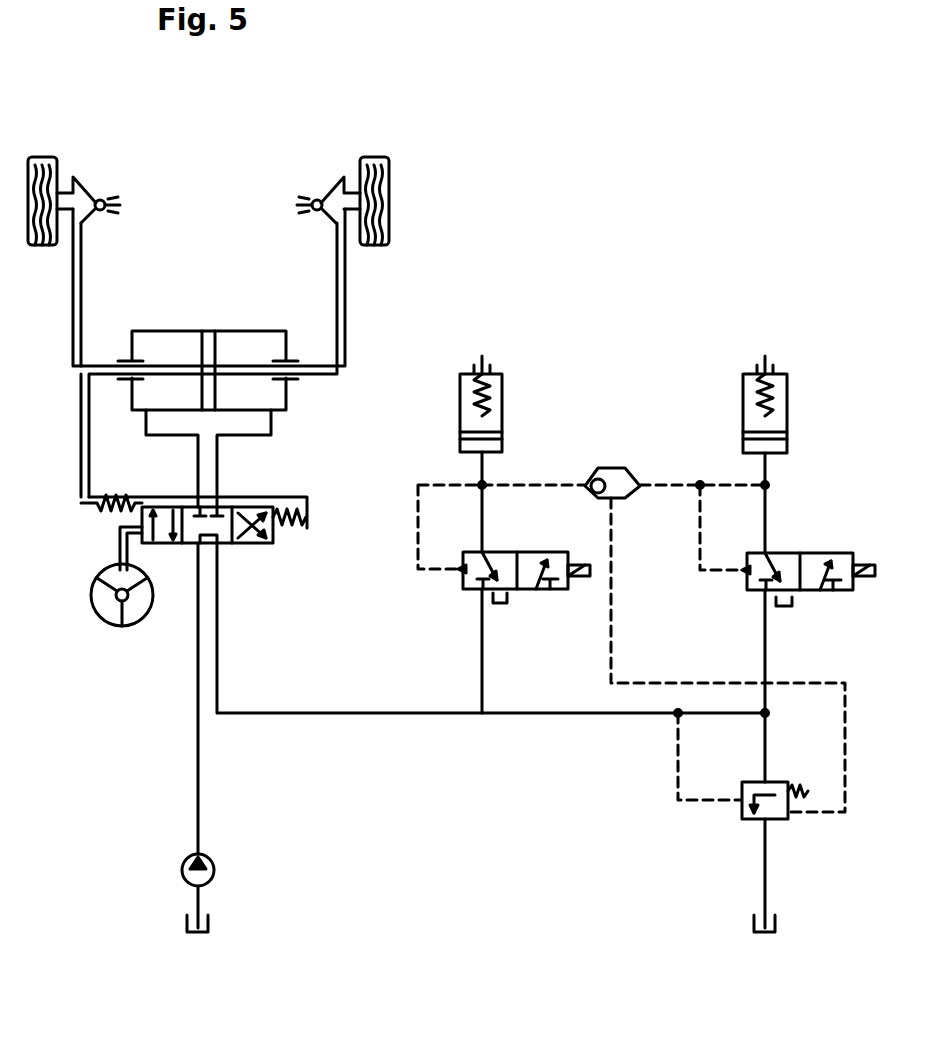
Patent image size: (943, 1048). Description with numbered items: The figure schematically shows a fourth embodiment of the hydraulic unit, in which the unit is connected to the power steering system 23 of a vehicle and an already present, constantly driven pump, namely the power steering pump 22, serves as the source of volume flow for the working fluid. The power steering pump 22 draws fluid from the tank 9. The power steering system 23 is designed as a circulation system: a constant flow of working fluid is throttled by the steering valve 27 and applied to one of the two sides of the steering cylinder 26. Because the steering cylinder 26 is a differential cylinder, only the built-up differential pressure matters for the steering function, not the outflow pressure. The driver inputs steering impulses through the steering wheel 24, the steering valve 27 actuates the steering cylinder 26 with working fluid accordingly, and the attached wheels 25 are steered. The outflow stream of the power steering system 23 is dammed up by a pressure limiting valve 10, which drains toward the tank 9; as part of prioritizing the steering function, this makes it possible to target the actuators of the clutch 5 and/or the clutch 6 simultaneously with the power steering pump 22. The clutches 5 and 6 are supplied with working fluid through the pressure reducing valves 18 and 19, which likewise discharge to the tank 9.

The clutch 5 is at (744, 385).
The clutch 6 is at (504, 386).
The tank 9 is at (197, 935).
The pressure limiting valve 10 is at (773, 810).
The pressure reducing valve 18 is at (848, 547).
The pressure reducing valve 19 is at (528, 549).
The power steering pump 22 is at (182, 872).
The power steering system 23 is at (368, 338).
The steering wheel 24 is at (92, 600).
The wheels 25 is at (43, 157).
The steering cylinder 26 is at (209, 332).
The steering valve 27 is at (256, 545).